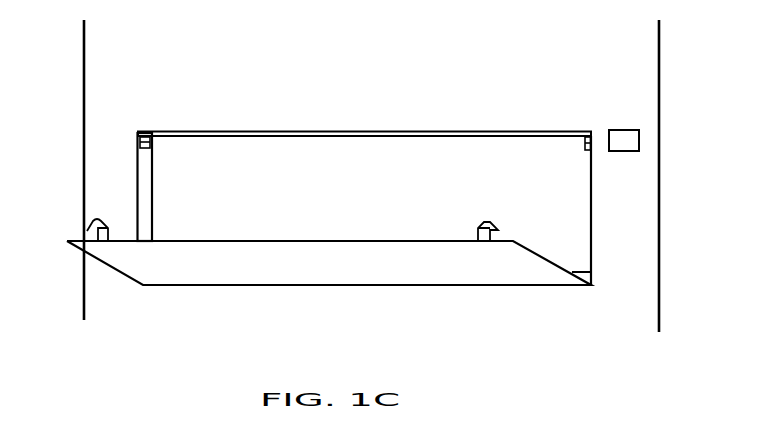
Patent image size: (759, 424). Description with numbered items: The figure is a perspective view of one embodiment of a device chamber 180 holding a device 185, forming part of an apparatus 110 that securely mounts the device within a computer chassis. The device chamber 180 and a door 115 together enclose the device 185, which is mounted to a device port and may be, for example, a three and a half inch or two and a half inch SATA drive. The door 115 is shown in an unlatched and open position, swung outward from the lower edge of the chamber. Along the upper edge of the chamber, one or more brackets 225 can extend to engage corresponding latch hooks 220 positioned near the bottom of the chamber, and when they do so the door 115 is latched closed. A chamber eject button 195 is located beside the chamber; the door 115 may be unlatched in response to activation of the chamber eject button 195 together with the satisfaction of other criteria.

The apparatus 110 is at (63, 69).
The door 115 is at (133, 265).
The device chamber 180 is at (136, 216).
The device 185 is at (313, 187).
The chamber eject button 195 is at (636, 130).
The latch hooks 220 is at (93, 219).
The brackets 225 is at (143, 134).